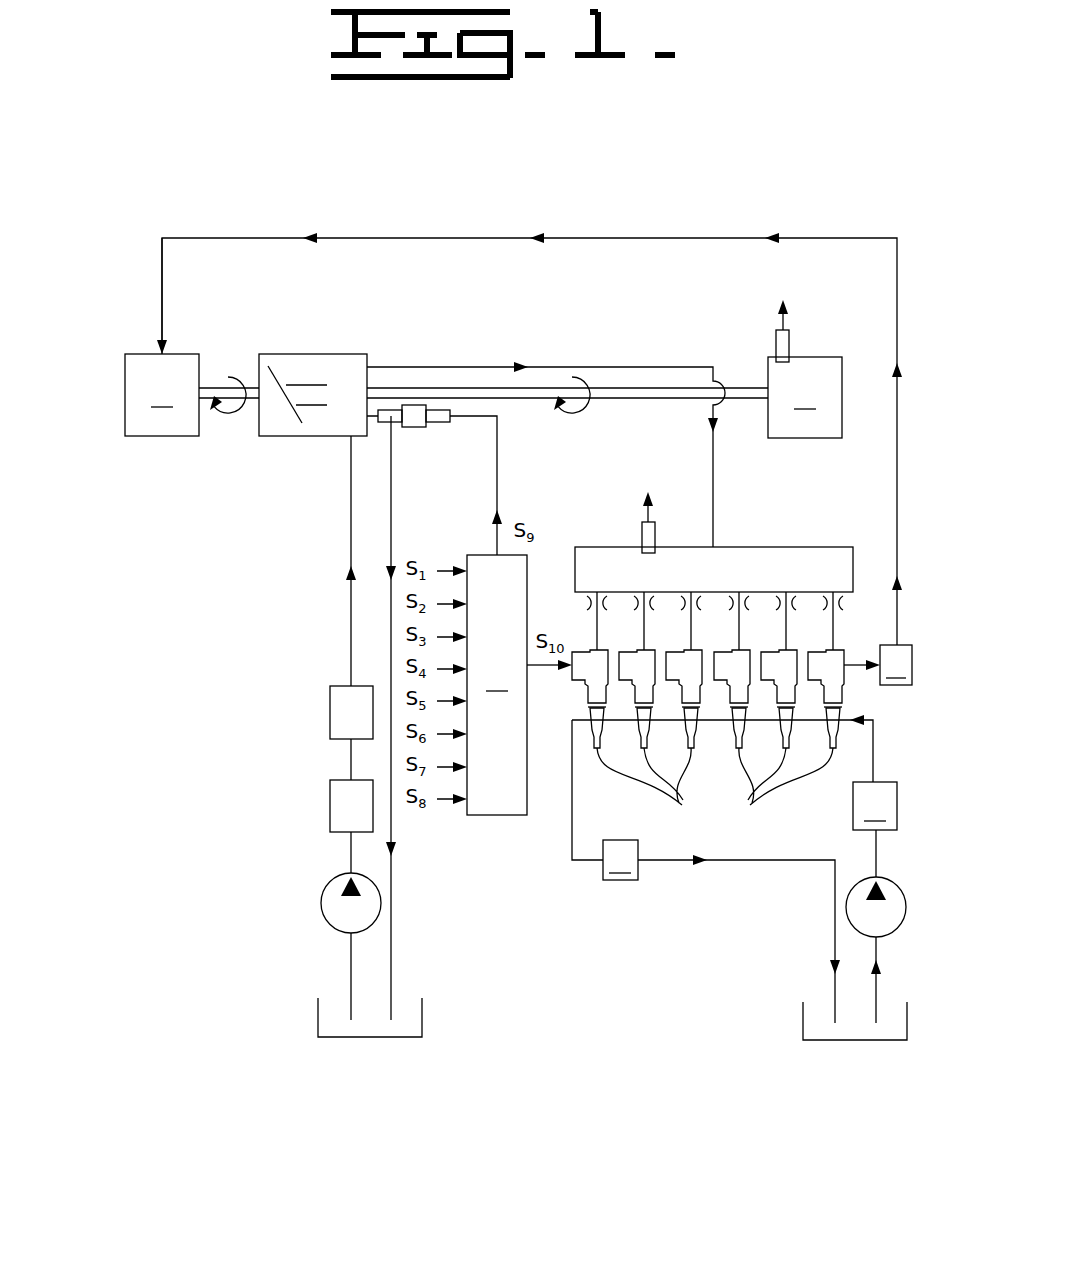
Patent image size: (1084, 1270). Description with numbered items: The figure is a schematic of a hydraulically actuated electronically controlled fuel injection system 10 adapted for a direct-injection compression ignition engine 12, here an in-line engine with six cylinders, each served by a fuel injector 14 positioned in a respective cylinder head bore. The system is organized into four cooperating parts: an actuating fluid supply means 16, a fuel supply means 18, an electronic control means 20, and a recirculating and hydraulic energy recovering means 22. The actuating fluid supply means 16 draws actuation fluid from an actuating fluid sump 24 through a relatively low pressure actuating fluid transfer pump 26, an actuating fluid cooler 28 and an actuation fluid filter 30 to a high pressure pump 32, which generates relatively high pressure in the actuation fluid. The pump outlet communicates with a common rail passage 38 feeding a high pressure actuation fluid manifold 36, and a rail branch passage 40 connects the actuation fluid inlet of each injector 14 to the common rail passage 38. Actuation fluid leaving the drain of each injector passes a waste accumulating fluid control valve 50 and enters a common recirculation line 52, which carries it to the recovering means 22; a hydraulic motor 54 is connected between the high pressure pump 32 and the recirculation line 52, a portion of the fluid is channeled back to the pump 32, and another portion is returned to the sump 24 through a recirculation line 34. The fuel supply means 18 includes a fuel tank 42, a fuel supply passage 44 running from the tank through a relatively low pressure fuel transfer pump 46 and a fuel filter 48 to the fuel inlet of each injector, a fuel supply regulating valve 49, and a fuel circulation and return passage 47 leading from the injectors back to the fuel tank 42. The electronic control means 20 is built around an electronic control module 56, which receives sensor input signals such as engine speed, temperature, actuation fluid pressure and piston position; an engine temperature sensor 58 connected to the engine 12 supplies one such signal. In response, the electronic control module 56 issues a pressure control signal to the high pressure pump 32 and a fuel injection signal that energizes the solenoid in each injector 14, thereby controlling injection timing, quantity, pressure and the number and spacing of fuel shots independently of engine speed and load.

The fuel injection system 10 is at (688, 192).
The engine 12 is at (805, 397).
The fuel injector 14 is at (680, 803).
The actuating fluid supply means 16 is at (382, 1068).
The fuel supply means 18 is at (853, 1063).
The electronic control means 20 is at (497, 715).
The recirculating and hydraulic energy recovering means 22 is at (137, 217).
The actuating fluid sump 24 is at (422, 1013).
The actuating fluid transfer pump 26 is at (330, 905).
The actuating fluid cooler 28 is at (330, 796).
The actuation fluid filter 30 is at (330, 718).
The high pressure pump 32 is at (302, 436).
The recirculation line 34 is at (391, 900).
The high pressure actuation fluid manifold 36 is at (766, 540).
The common rail passage 38 is at (620, 548).
The rail branch passage 40 is at (835, 633).
The fuel tank 42 is at (803, 1028).
The fuel supply passage 44 is at (873, 748).
The fuel transfer pump 46 is at (900, 892).
The fuel circulation and return passage 47 is at (835, 880).
The fuel filter 48 is at (875, 806).
The fuel supply regulating valve 49 is at (620, 860).
The waste accumulating fluid control valve 50 is at (878, 665).
The common recirculation line 52 is at (390, 238).
The hydraulic motor 54 is at (162, 395).
The electronic control module 56 is at (500, 833).
The engine temperature sensor 58 is at (790, 342).